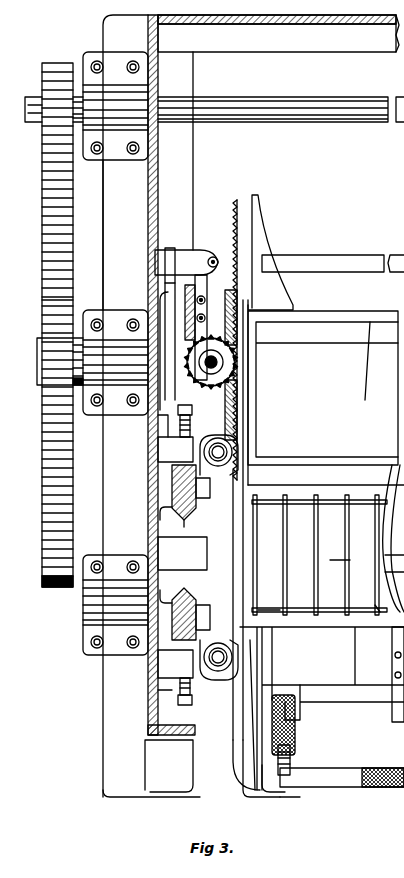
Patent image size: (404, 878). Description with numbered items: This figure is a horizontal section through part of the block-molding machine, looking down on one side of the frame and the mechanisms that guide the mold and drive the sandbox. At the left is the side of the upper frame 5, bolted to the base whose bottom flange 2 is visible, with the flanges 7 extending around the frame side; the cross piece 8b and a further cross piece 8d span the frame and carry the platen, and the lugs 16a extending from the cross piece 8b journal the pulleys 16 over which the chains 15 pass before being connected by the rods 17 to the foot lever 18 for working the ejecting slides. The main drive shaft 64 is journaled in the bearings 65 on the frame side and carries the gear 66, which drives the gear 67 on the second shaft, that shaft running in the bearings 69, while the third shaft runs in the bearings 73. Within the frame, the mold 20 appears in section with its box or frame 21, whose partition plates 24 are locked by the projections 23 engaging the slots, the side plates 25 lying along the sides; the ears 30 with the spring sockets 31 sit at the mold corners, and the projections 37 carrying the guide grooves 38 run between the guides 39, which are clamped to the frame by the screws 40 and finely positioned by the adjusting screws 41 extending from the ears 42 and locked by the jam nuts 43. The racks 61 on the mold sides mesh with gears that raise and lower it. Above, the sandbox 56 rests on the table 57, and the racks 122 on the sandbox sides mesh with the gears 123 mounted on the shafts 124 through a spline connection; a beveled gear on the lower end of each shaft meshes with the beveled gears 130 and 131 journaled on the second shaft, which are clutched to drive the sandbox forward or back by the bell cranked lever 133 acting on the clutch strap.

The flange 2 is at (115, 210).
The side of upper frame 5 is at (158, 196).
The flanges 7 is at (180, 213).
The cross piece 8b is at (265, 668).
The bracket arm 8d is at (250, 710).
The chains 15 is at (292, 756).
The pulleys 16 is at (296, 738).
The lugs 16a is at (302, 711).
The rods 17 is at (283, 784).
The foot lever 18 is at (374, 768).
The mold 20 is at (303, 495).
The box or frame of mold 21 is at (309, 557).
The projections 23 is at (350, 612).
The partition plates 24 is at (335, 560).
The side plates 25 is at (272, 612).
The ears 30 is at (240, 470).
The spring sockets 31 is at (224, 452).
The projections 37 is at (195, 528).
The guide grooves 38 is at (170, 523).
The guides 39 is at (172, 488).
The screws 40 is at (203, 490).
The adjusting screws 41 is at (178, 425).
The ears 42 is at (175, 557).
The jam nuts 43 is at (158, 456).
The sandbox 56 is at (350, 456).
The table 57 is at (335, 364).
The racks 61 is at (182, 553).
The shaft 64 is at (282, 103).
The bearings 65 is at (108, 97).
The gear 66 is at (58, 56).
The gear 67 is at (42, 249).
The bearings 69 is at (107, 350).
The bearings 73 is at (83, 618).
The racks 122 is at (245, 300).
The gears 123 is at (222, 362).
The shaft 124 is at (218, 366).
The beveled gear 130 is at (242, 405).
The beveled gear 131 is at (186, 296).
The bell cranked lever 133 is at (342, 250).